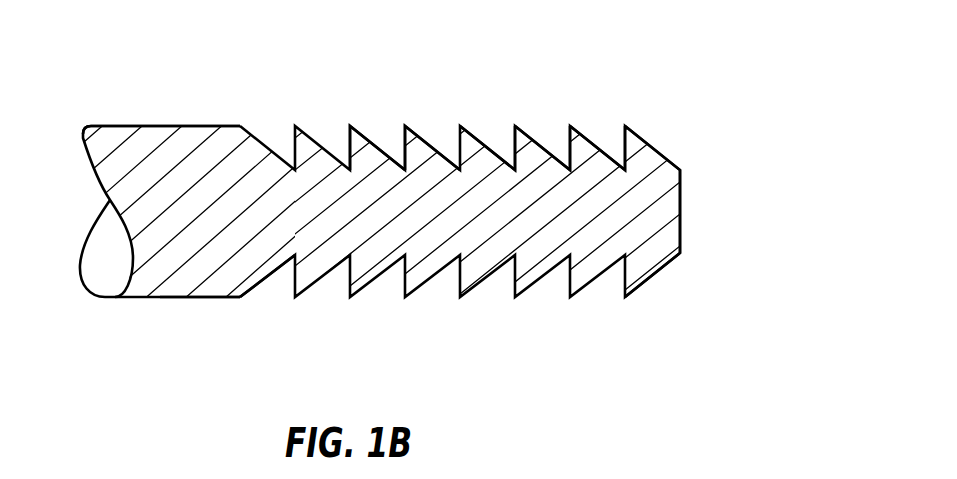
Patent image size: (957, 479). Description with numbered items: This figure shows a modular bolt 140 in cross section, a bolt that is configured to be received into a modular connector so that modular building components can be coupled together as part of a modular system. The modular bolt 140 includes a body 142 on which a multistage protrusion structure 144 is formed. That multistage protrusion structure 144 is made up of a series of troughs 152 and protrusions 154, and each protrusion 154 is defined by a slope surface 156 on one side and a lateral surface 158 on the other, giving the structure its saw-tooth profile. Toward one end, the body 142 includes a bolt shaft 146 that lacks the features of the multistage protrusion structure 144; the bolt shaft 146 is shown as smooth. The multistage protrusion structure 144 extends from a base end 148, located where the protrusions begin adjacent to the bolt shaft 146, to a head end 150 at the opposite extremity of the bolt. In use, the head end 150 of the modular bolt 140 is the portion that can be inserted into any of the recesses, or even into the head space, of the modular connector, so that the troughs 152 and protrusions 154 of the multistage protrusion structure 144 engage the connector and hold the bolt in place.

The modular bolt 140 is at (308, 83).
The body 142 is at (170, 140).
The multistage protrusion structure 144 is at (488, 103).
The bolt shaft 146 is at (202, 318).
The base end 148 is at (237, 318).
The head end 150 is at (722, 217).
The troughs 152 is at (390, 126).
The protrusions 154 is at (405, 130).
The slope surface 156 is at (603, 132).
The lateral surface 158 is at (552, 137).